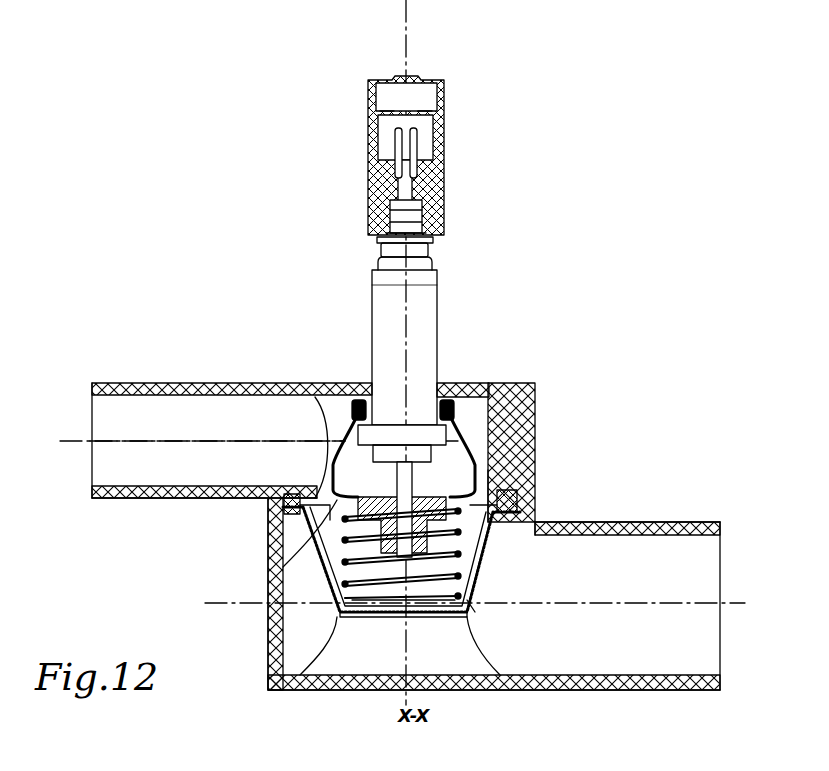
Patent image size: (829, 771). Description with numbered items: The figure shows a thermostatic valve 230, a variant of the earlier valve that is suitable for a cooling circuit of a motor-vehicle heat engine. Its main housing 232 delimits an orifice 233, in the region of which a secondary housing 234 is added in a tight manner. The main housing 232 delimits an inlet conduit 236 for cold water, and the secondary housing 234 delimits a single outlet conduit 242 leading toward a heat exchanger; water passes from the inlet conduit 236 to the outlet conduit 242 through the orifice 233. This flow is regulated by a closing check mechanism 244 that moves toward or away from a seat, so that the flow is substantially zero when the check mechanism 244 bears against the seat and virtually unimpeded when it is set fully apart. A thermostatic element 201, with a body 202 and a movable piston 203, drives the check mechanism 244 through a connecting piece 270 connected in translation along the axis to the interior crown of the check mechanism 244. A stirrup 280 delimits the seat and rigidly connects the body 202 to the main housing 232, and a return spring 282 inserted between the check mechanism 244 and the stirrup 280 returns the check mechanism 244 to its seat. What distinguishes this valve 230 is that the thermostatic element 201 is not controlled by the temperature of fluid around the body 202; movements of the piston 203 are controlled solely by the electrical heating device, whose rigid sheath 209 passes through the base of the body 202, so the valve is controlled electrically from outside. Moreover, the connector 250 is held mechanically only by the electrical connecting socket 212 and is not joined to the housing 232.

The thermostatic element 201 is at (438, 335).
The body 202 is at (385, 308).
The piston 203 is at (322, 460).
The rigid sheath 209 is at (420, 258).
The electrical connecting socket 212 is at (433, 224).
The thermostatic valve 230 is at (180, 551).
The main housing 232 is at (530, 421).
The orifice 233 is at (525, 472).
The secondary housing 234 is at (622, 522).
The inlet conduit 236 is at (232, 440).
The outlet conduit 242 is at (627, 606).
The closing check mechanism 244 is at (283, 560).
The connector 250 is at (444, 165).
The connecting piece 270 is at (483, 552).
The stirrup 280 is at (470, 572).
The return spring 282 is at (473, 595).